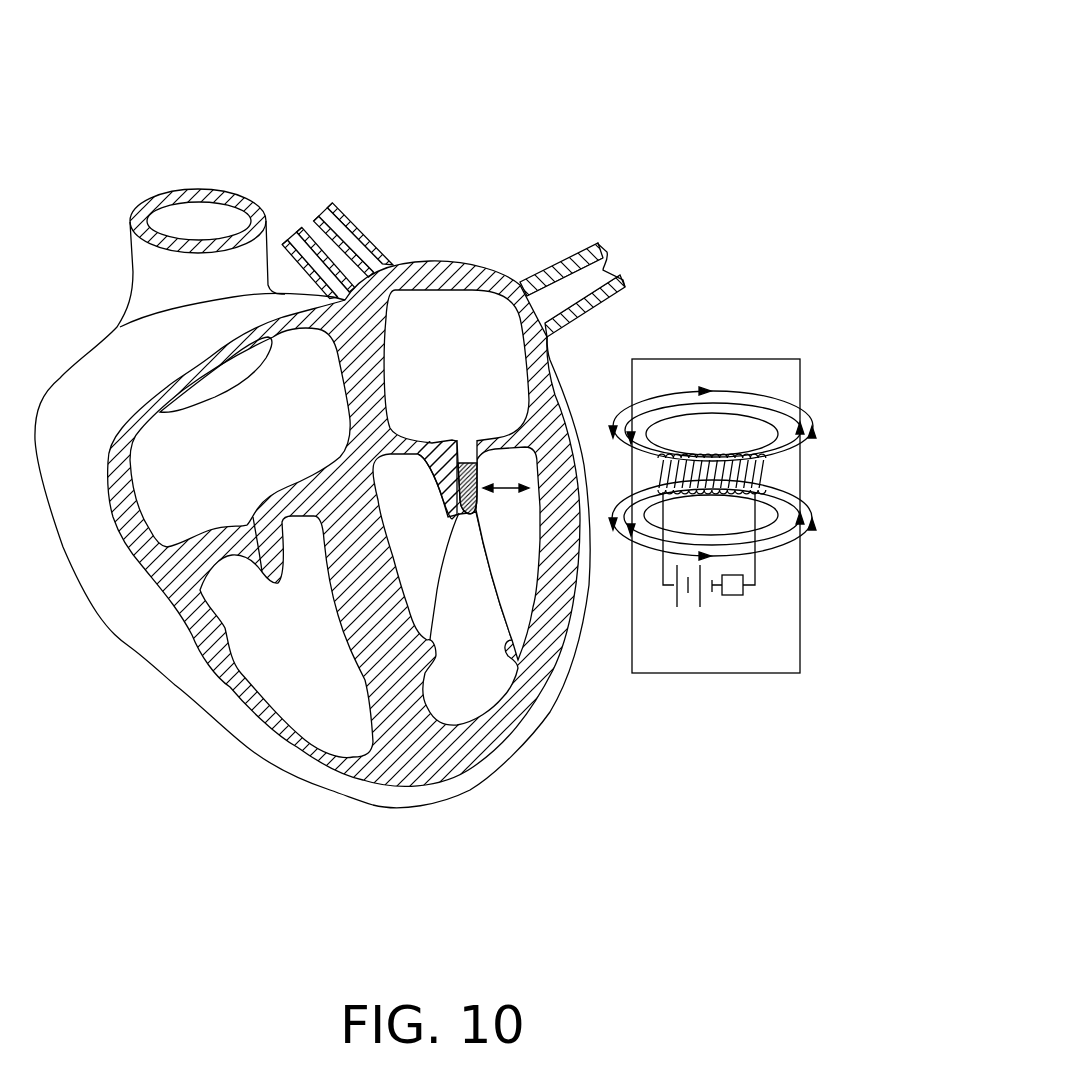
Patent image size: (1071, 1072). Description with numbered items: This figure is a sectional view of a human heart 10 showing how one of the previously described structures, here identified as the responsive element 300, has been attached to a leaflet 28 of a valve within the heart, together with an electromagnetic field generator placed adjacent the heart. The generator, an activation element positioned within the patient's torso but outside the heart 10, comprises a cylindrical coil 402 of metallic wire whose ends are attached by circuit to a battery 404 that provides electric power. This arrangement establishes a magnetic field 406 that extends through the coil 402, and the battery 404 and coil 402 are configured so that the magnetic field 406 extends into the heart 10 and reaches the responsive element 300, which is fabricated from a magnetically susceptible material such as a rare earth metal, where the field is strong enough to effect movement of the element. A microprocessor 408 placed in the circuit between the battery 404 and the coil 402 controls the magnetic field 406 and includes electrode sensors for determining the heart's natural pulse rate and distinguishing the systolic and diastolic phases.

The heart 10 is at (342, 417).
The leaflet 28 is at (525, 428).
The responsive element 300 is at (460, 466).
The cylindrical coil 402 is at (738, 460).
The battery 404 is at (707, 600).
The magnetic field 406 is at (666, 392).
The microprocessor 408 is at (745, 590).